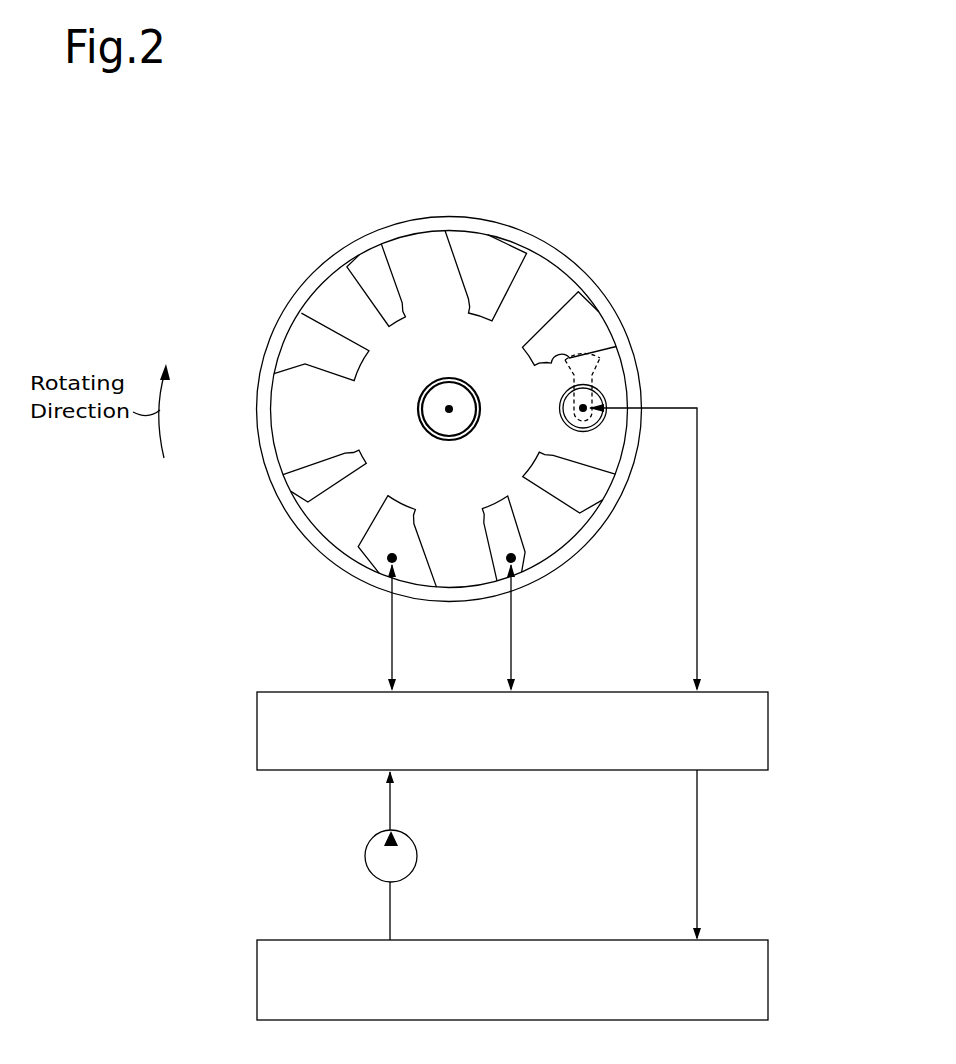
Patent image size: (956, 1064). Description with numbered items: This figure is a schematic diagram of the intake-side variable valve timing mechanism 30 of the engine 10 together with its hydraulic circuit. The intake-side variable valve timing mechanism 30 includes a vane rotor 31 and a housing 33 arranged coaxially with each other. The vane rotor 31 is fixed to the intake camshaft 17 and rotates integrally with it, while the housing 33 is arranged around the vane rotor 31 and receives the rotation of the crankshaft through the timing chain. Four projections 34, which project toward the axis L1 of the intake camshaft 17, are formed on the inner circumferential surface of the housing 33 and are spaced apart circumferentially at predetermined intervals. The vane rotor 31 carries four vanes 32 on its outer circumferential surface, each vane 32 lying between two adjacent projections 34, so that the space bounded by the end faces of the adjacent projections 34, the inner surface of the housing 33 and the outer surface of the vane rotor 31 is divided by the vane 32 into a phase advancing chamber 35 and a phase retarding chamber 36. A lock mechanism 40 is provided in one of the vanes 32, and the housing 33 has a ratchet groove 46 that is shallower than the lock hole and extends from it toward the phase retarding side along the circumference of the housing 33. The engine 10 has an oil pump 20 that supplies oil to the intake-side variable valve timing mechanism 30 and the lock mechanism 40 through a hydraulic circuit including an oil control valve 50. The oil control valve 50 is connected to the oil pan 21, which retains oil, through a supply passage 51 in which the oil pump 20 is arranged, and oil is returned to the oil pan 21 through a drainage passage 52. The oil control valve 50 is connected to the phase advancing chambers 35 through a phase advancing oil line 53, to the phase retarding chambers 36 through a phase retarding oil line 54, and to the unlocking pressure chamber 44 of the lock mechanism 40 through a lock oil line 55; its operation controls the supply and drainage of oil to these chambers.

The engine 10 is at (810, 295).
The intake camshaft 17 is at (481, 405).
The oil pump 20 is at (417, 856).
The oil pan 21 is at (769, 982).
The intake-side variable valve timing mechanism 30 is at (238, 595).
The vane rotor 31 is at (393, 340).
The vane 32 is at (417, 240).
The housing 33 is at (301, 320).
The projection 34 is at (370, 348).
The phase advancing chamber 35 is at (377, 252).
The phase retarding chamber 36 is at (476, 240).
The lock mechanism 40 is at (649, 376).
The unlocking pressure chamber 44 is at (605, 386).
The ratchet groove 46 is at (606, 356).
The oil control valve 50 is at (769, 732).
The supply passage 51 is at (389, 806).
The drainage passage 52 is at (697, 858).
The phase advancing oil line 53 is at (511, 652).
The phase retarding oil line 54 is at (389, 652).
The lock oil line 55 is at (698, 548).
The axis of the intake camshaft L1 is at (449, 405).